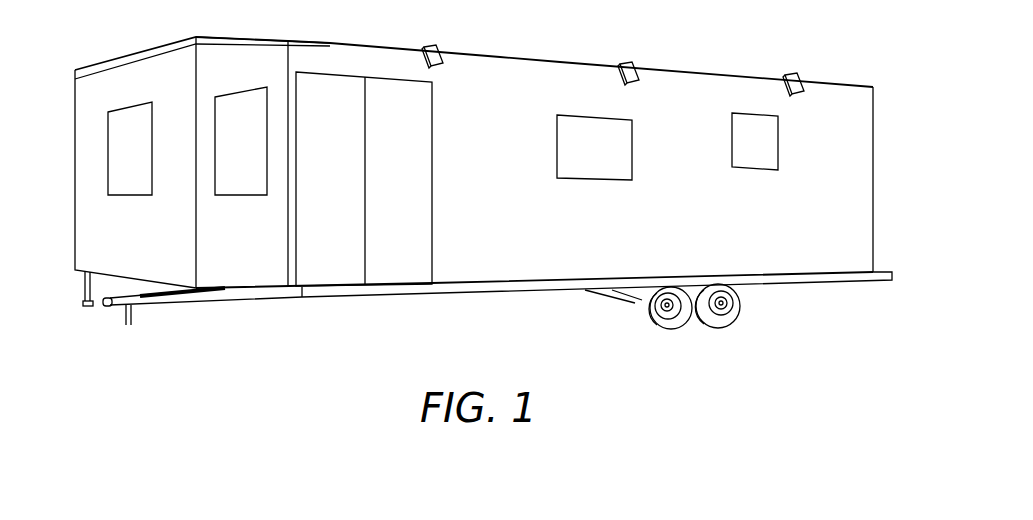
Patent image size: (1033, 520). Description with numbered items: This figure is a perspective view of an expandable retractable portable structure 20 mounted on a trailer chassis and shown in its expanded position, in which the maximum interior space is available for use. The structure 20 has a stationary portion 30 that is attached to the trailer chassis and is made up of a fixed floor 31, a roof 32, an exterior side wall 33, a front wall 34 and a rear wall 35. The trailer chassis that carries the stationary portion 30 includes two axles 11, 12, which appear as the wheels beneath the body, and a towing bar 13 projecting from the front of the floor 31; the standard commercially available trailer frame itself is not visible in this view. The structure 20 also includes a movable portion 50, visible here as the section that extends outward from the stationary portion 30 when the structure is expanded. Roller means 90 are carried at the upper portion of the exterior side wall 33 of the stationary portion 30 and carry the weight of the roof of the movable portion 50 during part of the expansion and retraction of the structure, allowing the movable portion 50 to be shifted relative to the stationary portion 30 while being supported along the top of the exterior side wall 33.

The axle 11 is at (681, 333).
The axle 12 is at (738, 326).
The towing bar 13 is at (91, 320).
The expandable retractable structure 20 is at (502, 184).
The stationary portion 30 is at (261, 205).
The fixed floor 31 is at (501, 306).
The roof 32 is at (294, 21).
The exterior side wall 33 is at (725, 88).
The front wall 34 is at (525, 314).
The rear wall 35 is at (504, 162).
The movable portion 50 is at (472, 47).
The roller means 90 is at (643, 51).